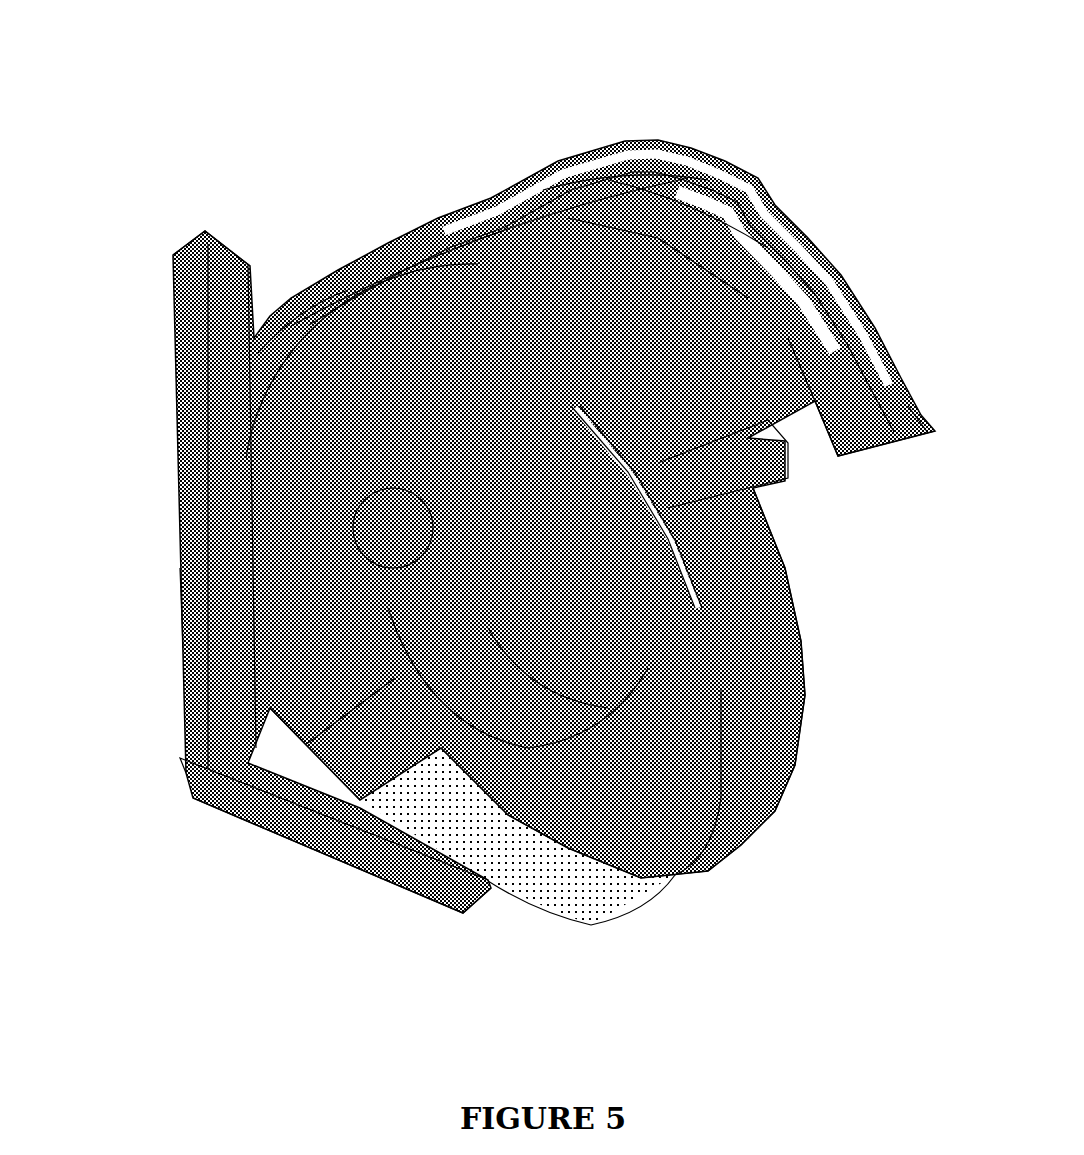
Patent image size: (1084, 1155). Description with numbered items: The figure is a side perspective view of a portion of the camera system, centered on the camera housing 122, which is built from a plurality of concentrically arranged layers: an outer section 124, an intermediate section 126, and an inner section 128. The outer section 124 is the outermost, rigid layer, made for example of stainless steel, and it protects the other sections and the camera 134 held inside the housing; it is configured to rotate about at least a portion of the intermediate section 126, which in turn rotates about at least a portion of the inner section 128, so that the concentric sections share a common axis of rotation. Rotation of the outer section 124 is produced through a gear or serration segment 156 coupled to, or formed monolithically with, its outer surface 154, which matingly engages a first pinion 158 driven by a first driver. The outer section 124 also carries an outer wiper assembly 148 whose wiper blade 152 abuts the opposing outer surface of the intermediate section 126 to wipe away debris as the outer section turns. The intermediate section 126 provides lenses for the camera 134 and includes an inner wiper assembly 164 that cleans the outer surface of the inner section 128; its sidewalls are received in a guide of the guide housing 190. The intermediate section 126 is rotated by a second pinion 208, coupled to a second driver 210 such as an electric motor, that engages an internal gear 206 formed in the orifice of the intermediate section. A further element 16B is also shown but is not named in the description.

The camera housing 122 is at (825, 163).
The outer section 124 is at (384, 226).
The outer surface 154 is at (297, 280).
The outer wiper assembly 148 is at (483, 200).
The wiper blade 152 is at (535, 182).
The inner wiper assembly 164 is at (600, 172).
The intermediate section 126 is at (650, 230).
The camera 134 is at (715, 290).
The guide housing 190 is at (900, 398).
The inner section 128 is at (790, 397).
The first pinion 158 is at (268, 772).
The gear or serration segment 156 is at (325, 835).
The second pinion 208 is at (400, 650).
The second driver 210 is at (505, 700).
The internal gear or serrations 206 is at (543, 700).
The wheel 16B is at (667, 833).